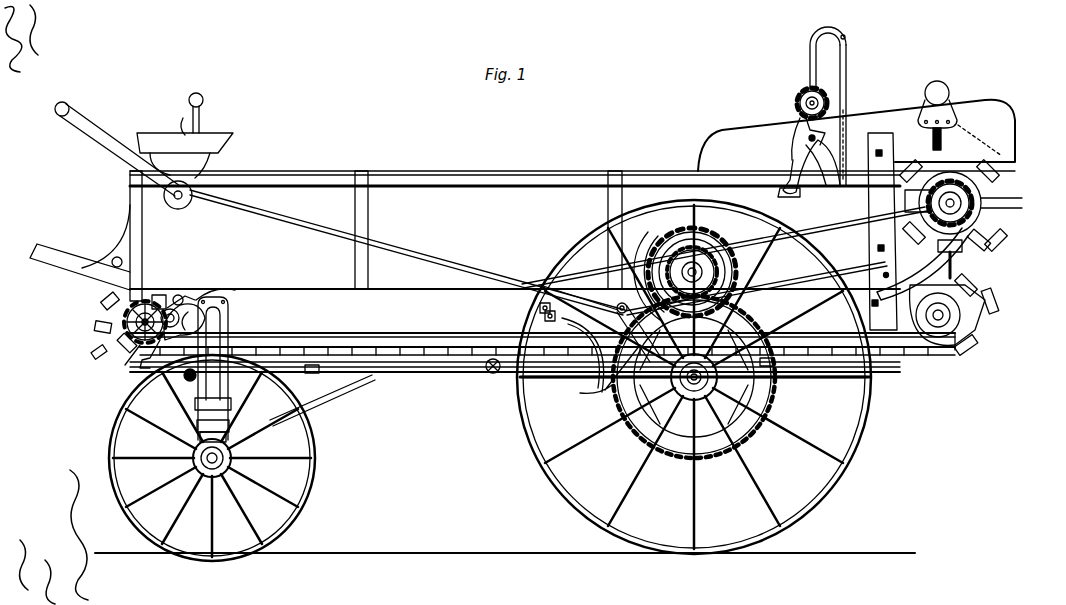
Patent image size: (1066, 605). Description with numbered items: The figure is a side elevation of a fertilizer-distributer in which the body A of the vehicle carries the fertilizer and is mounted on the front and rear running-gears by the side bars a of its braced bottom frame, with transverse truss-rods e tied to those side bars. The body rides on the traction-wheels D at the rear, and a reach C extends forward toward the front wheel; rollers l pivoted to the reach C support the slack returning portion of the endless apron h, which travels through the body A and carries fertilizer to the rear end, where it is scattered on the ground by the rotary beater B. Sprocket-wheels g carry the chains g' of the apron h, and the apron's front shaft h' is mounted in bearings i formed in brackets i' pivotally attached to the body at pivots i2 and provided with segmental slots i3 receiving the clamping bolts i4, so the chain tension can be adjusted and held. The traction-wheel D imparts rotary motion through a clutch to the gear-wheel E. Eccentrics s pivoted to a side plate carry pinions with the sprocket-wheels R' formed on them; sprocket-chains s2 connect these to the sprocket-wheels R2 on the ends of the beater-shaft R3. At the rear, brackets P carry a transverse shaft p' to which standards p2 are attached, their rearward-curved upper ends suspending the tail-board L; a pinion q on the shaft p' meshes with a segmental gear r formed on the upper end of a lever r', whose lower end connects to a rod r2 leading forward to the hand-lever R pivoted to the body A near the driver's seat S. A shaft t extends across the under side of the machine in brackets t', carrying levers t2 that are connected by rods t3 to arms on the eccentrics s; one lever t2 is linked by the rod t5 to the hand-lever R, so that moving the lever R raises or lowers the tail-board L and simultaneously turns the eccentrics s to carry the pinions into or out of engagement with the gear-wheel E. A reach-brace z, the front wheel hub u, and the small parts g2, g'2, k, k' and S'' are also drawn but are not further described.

The body of the vehicle A is at (522, 205).
The rod r2 is at (550, 185).
The hand-lever R is at (123, 155).
The driver's seat S is at (185, 135).
The rod t5 is at (418, 258).
The traction-wheel D is at (865, 440).
The gear-wheel E is at (745, 432).
The sprocket-wheel R' is at (698, 271).
The eccentric s is at (658, 252).
The inner pinion S'' is at (715, 272).
The sprocket-chain s2 is at (724, 261).
The front carrying wheel and standard u is at (198, 458).
The side bar a is at (542, 321).
The chain g' is at (547, 332).
The endless apron h is at (492, 351).
The reach C is at (450, 372).
The bearing i is at (336, 328).
The roller l is at (312, 374).
The diagonal brace z is at (342, 405).
The tail-board L is at (846, 75).
The standard p2 is at (810, 60).
The transverse shaft p' is at (799, 98).
The pinion q is at (793, 108).
The segmental gear r is at (797, 131).
The lever r' is at (804, 167).
The bracket P is at (797, 186).
The beater-shaft R3 is at (985, 192).
The sprocket-wheel R2 is at (1022, 210).
The rotary beater B is at (1000, 238).
The rear pulley and bracket g2 is at (975, 302).
The sprocket-wheel g is at (123, 327).
The pulley block g'2 is at (91, 364).
The link k is at (126, 367).
The link arm k' is at (150, 363).
The bolt i4 is at (183, 322).
The pivot i2 is at (159, 295).
The front shaft h' is at (180, 283).
The bracket i' is at (367, 306).
The segmental slot i3 is at (212, 292).
The transverse truss-rod e is at (551, 314).
The lever t2 is at (604, 300).
The rod t3 is at (636, 325).
The bracket t' is at (583, 355).
The shaft t is at (610, 377).